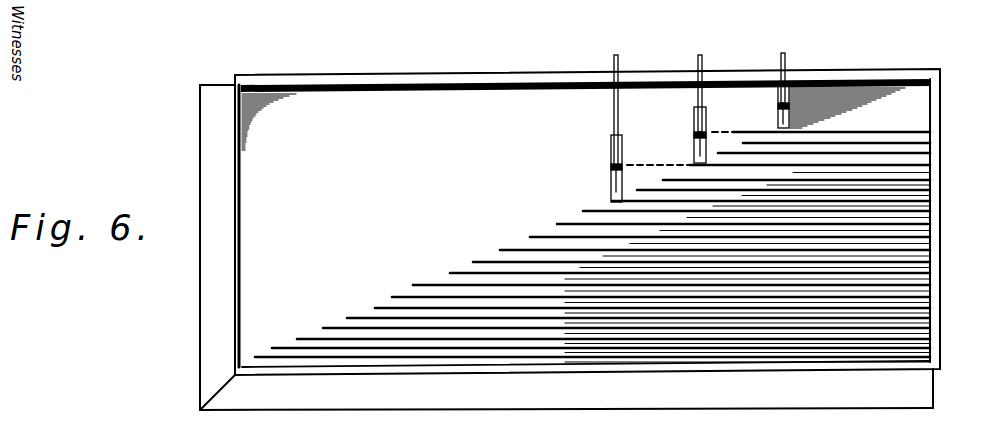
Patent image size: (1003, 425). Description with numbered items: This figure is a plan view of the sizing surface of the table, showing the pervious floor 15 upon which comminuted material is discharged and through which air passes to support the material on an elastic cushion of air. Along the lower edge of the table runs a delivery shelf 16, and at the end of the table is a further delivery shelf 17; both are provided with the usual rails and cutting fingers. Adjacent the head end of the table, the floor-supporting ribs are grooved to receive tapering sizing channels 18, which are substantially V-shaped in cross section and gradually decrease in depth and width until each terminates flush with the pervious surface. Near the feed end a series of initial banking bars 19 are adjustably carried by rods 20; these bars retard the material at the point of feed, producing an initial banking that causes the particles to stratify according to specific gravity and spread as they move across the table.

The pervious floor 15 is at (587, 222).
The delivery shelf 16 is at (468, 400).
The delivery shelf 17 is at (203, 267).
The tapering sizing channels 18 is at (933, 232).
The initial banking bars 19 is at (693, 148).
The rods 20 is at (699, 94).